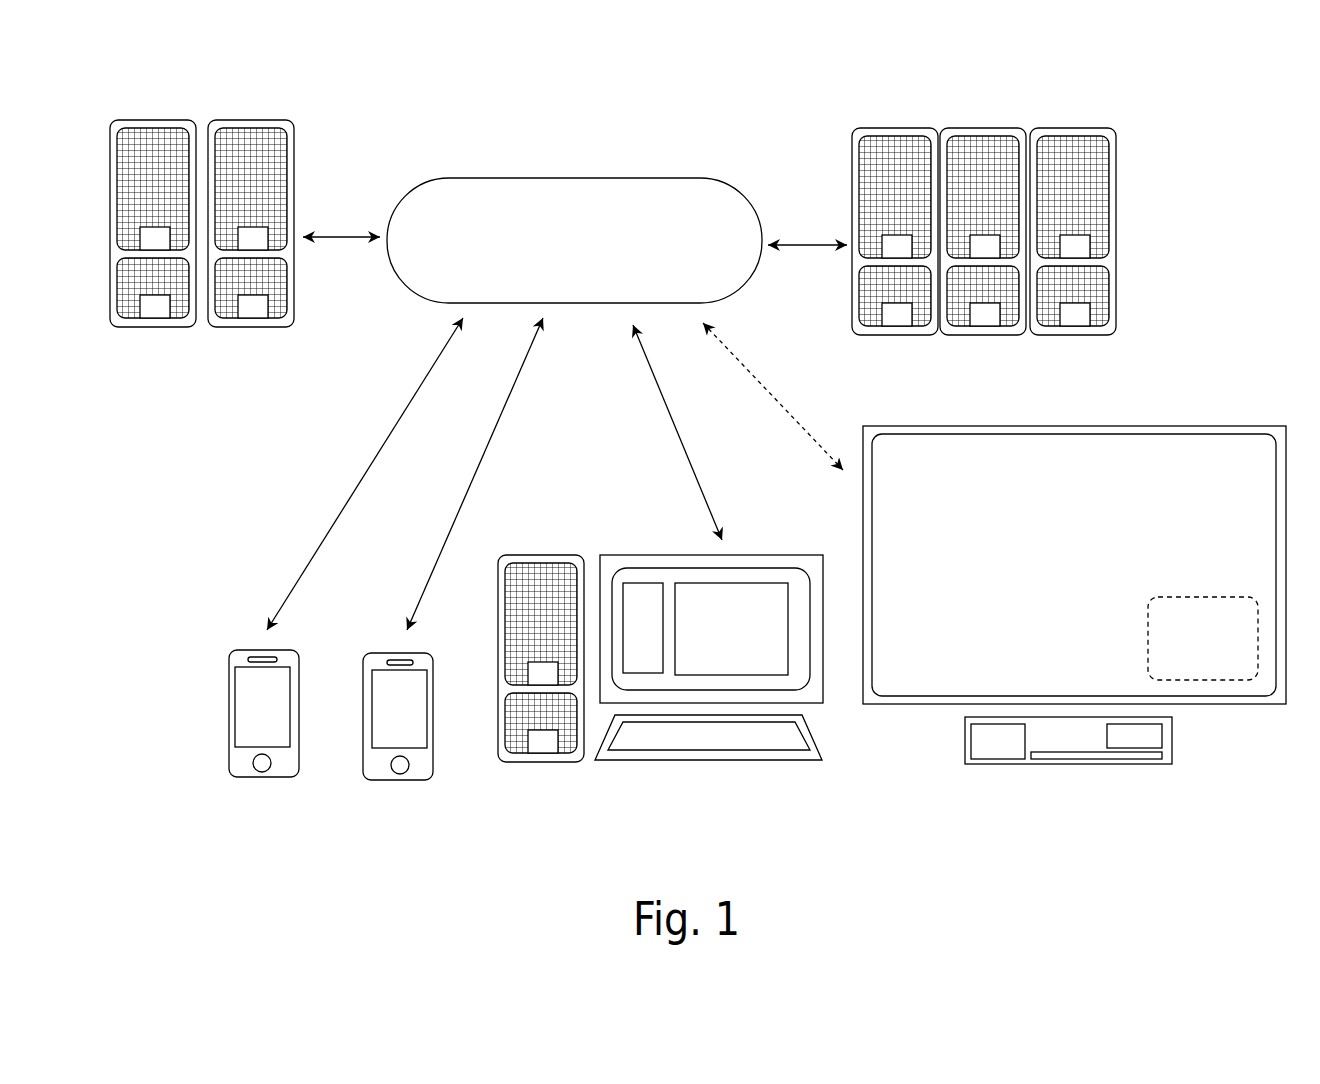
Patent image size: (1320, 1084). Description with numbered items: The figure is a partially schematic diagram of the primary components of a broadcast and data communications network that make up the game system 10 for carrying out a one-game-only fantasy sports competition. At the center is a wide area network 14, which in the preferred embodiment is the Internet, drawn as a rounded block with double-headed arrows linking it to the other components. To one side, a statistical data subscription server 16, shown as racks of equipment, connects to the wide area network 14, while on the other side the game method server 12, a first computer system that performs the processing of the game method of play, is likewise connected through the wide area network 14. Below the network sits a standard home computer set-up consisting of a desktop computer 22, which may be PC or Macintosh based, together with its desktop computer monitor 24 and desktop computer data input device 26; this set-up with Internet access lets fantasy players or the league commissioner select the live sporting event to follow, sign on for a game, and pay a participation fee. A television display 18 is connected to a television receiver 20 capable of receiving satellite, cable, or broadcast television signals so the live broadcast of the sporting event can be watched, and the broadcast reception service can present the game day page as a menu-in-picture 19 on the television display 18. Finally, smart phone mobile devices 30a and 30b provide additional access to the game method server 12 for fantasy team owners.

The game system 10 is at (1222, 165).
The game method server 12 is at (898, 128).
The wide area network 14 is at (577, 178).
The statistical data subscription server 16 is at (248, 120).
The television display 18 is at (1232, 426).
The menu-in-picture 19 is at (1195, 680).
The television receiver 20 is at (1068, 764).
The desktop computer 22 is at (538, 762).
The desktop computer monitor 24 is at (662, 555).
The desktop computer data input device 26 is at (722, 760).
The smart phone mobile device 30a is at (277, 777).
The smart phone mobile device 30b is at (408, 780).